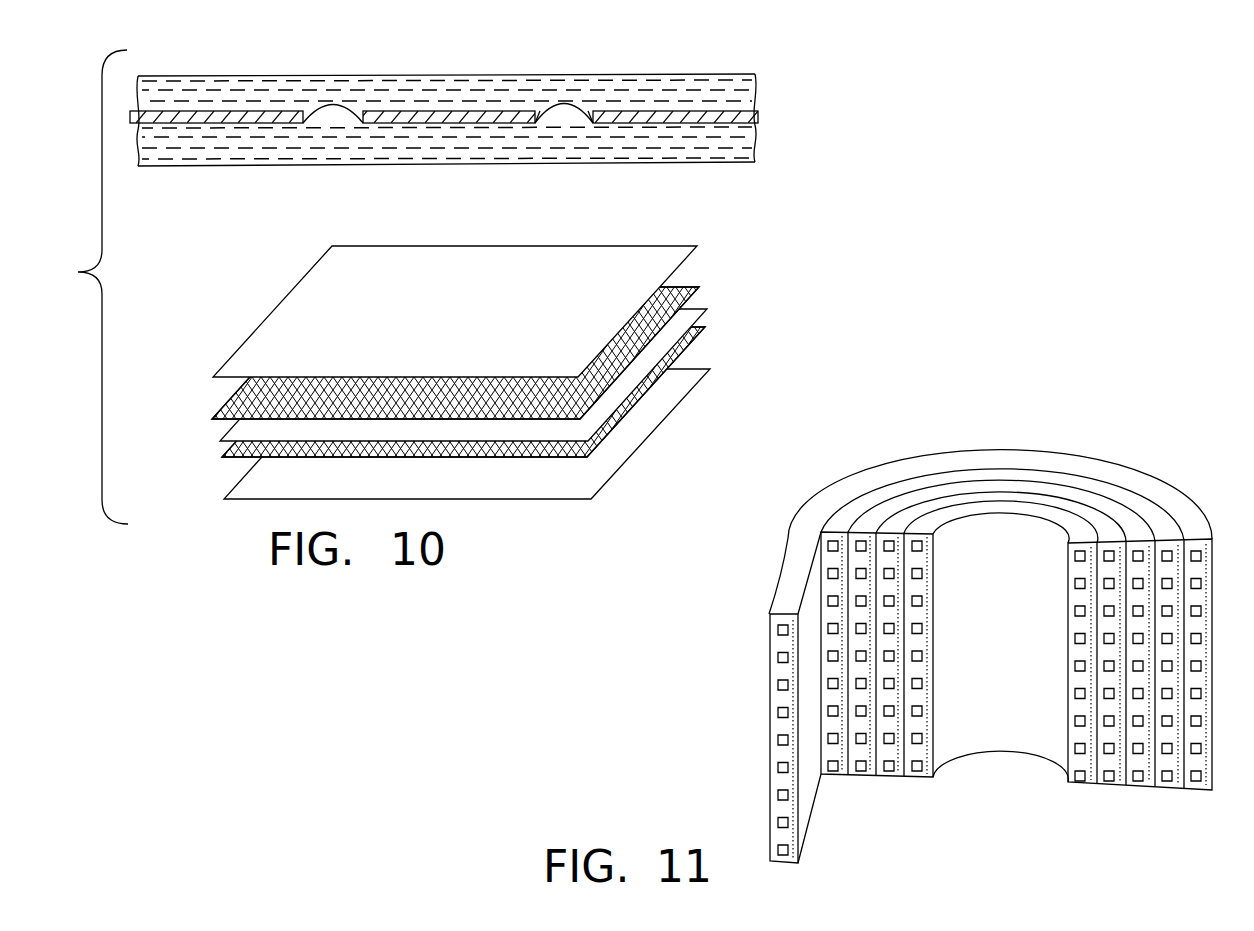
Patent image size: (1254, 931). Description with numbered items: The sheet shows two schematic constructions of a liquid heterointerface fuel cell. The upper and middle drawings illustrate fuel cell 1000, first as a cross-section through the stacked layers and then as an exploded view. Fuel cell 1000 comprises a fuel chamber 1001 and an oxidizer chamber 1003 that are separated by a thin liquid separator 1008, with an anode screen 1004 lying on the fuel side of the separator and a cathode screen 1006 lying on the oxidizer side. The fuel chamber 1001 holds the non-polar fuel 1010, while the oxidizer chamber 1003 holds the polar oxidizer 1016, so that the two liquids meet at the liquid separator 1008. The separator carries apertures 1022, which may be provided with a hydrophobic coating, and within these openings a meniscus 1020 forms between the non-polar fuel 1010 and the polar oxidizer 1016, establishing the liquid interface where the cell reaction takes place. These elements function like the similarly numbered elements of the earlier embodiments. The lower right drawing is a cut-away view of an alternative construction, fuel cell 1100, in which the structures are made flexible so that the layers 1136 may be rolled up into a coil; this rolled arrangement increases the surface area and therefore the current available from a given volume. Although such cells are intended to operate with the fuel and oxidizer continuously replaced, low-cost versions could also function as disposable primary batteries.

In FIG. 10, the fuel cell 1000 is at (235, 178).
In FIG. 10, the fuel chamber 1001 is at (446, 337).
In FIG. 10, the oxidizer chamber 1003 is at (237, 475).
In FIG. 10, the anode screen 1004 is at (687, 288).
In FIG. 10, the cathode screen 1006 is at (690, 348).
In FIG. 10, the liquid separator 1008 is at (705, 318).
In FIG. 10, the non-polar fuel 1010 is at (756, 89).
In FIG. 10, the polar oxidizer 1016 is at (757, 140).
In FIG. 10, the meniscus 1020 is at (546, 104).
In FIG. 10, the apertures 1022 is at (588, 118).
In FIG. 11, the fuel cell 1100 is at (743, 720).
In FIG. 11, the layers 1136 is at (790, 578).